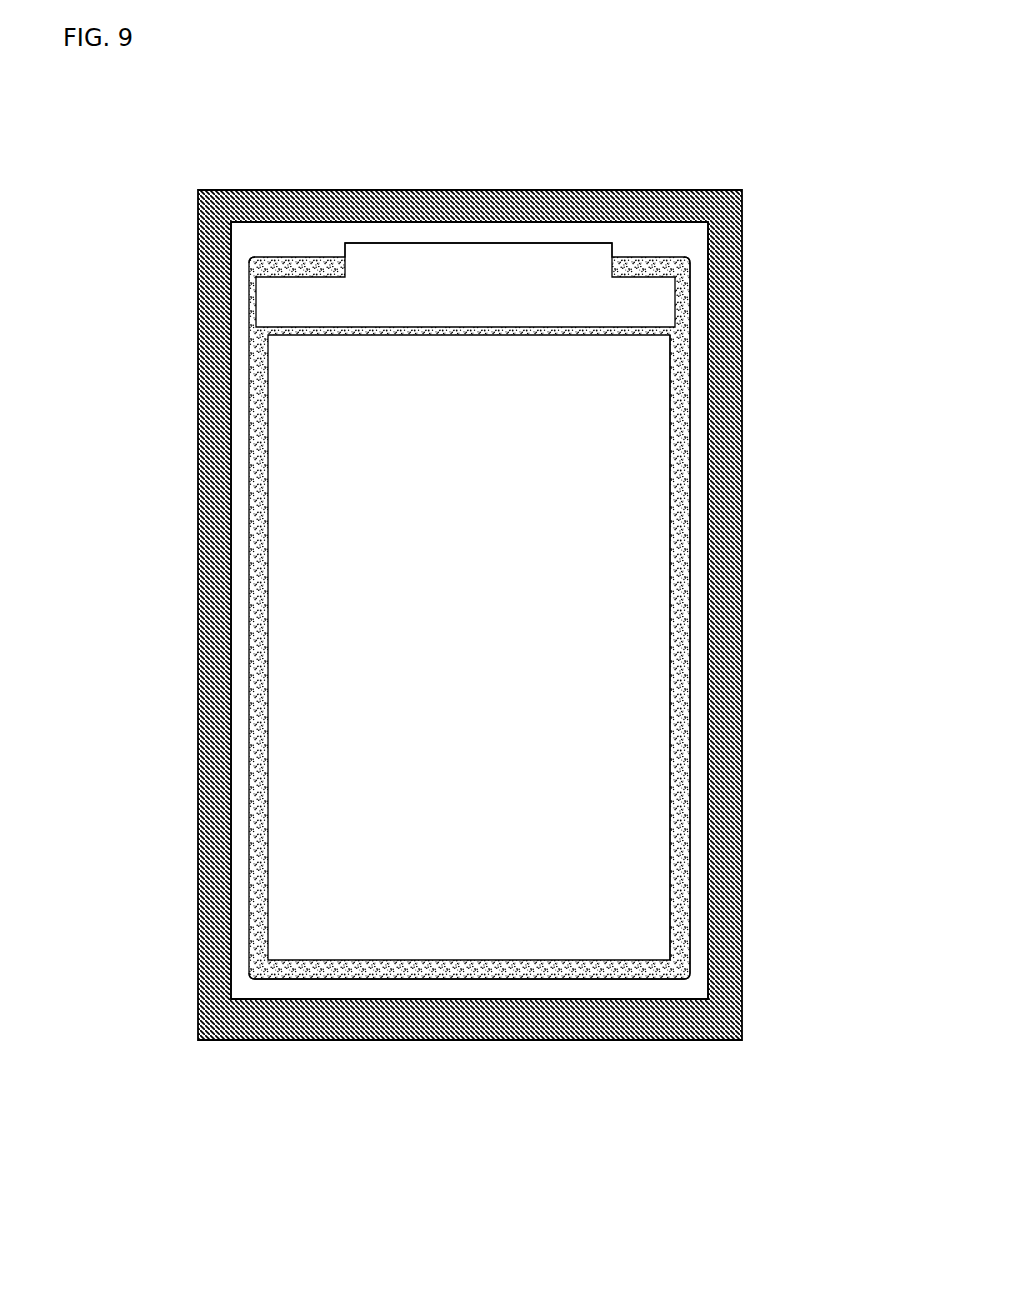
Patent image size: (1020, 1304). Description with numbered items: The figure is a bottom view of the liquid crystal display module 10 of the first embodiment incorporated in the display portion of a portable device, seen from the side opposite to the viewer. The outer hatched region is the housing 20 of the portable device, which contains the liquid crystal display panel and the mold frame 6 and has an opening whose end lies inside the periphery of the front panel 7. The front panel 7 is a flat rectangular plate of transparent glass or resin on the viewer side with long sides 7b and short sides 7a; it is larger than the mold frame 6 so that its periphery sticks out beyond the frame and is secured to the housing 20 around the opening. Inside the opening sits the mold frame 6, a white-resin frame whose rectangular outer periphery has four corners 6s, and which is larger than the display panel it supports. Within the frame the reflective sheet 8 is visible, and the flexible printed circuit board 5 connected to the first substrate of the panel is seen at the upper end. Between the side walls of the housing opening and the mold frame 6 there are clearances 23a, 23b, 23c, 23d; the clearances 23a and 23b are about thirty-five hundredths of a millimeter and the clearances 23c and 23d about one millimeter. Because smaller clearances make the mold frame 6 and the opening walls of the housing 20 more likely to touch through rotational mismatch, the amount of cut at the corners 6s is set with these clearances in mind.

The flexible printed circuit board 5 is at (536, 280).
The mold frame 6 is at (693, 762).
The corners 6s is at (247, 253).
The front panel 7 is at (706, 590).
The short sides 7a is at (420, 981).
The long sides 7b is at (696, 487).
The reflective sheet 8 is at (638, 865).
The liquid crystal display module 10 is at (430, 236).
The housing 20 is at (218, 397).
The clearance 23a is at (308, 241).
The clearance 23b is at (565, 987).
The clearance 23c is at (243, 620).
The clearance 23d is at (703, 395).